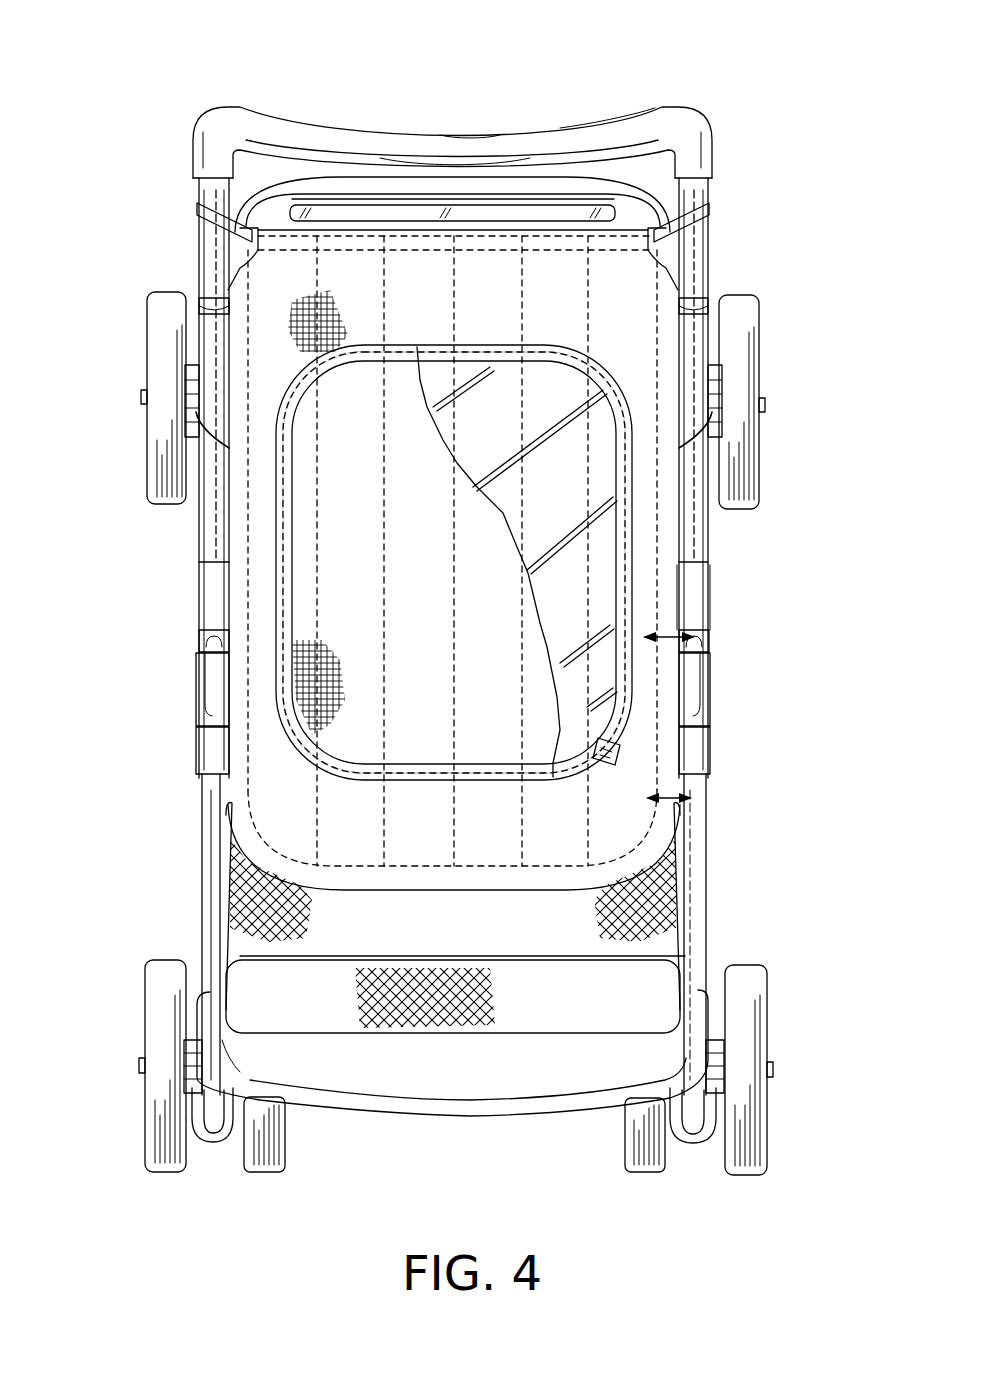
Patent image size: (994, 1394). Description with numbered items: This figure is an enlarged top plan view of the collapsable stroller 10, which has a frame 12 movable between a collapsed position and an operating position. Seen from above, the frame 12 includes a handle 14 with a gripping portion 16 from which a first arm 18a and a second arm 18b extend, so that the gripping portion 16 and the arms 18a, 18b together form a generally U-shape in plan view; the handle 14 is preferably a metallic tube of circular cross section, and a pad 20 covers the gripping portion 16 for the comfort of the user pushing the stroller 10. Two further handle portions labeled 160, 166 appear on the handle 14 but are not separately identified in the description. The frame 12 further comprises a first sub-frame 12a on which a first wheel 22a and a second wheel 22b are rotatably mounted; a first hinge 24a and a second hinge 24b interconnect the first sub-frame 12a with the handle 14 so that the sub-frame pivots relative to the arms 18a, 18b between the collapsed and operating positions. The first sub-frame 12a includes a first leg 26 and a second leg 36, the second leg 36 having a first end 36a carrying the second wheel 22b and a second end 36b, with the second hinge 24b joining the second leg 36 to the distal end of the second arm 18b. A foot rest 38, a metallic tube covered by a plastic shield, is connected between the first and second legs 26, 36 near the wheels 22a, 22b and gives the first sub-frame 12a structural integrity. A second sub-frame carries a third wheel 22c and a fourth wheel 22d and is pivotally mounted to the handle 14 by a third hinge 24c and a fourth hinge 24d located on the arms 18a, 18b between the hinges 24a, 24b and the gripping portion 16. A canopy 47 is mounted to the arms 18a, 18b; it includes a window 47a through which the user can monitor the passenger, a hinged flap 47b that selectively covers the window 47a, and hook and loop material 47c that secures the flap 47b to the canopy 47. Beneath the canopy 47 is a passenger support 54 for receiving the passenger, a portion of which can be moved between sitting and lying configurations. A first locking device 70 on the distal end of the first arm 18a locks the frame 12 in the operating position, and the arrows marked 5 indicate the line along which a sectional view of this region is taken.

The collapsable stroller 10 is at (735, 272).
The frame 12 is at (710, 590).
The first sub-frame 12a is at (708, 808).
The handle 14 is at (668, 100).
The gripping portion 16 is at (478, 143).
The first arm 18a is at (695, 540).
The second arm 18b is at (208, 512).
The pad 20 is at (458, 150).
The first wheel 22a is at (748, 1122).
The second wheel 22b is at (168, 1108).
The third wheel 22c is at (740, 430).
The fourth wheel 22d is at (168, 432).
The first hinge 24a is at (700, 750).
The second hinge 24b is at (208, 752).
The third hinge 24c is at (698, 608).
The fourth hinge 24d is at (208, 600).
The first leg 26 is at (707, 900).
The second leg 36 is at (205, 946).
The first end 36a is at (228, 1130).
The second end 36b is at (210, 795).
The foot rest 38 is at (445, 1084).
The canopy 47 is at (361, 831).
The window 47a is at (590, 496).
The hinged flap 47b is at (378, 571).
The hook and loop material 47c is at (598, 764).
The section line 5 is at (655, 715).
The passenger support 54 is at (577, 1014).
The first locking device 70 is at (208, 682).
The handle upper surface 160 is at (625, 128).
The handle cross member 166 is at (325, 138).